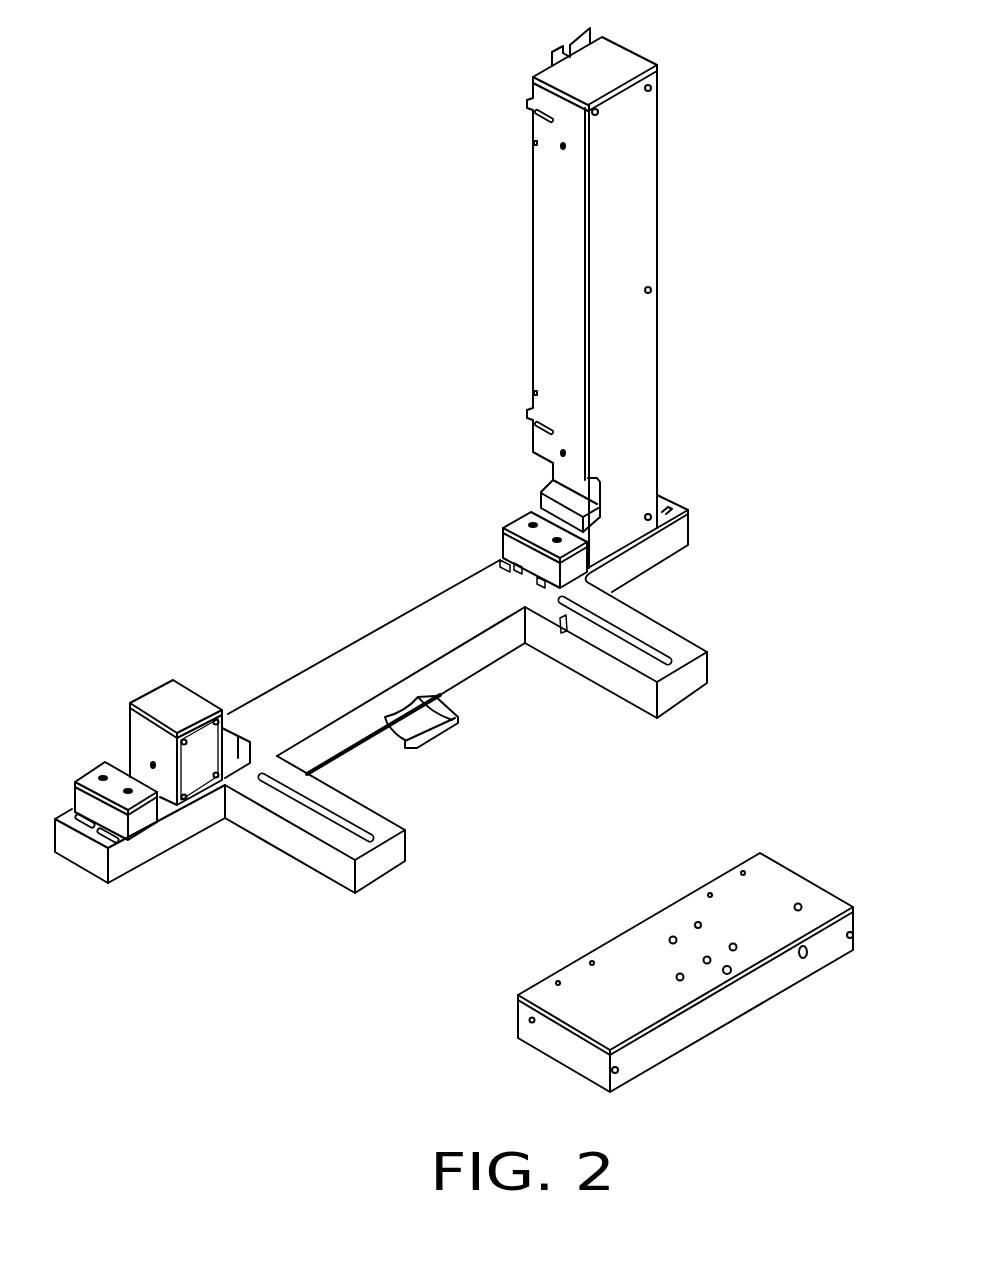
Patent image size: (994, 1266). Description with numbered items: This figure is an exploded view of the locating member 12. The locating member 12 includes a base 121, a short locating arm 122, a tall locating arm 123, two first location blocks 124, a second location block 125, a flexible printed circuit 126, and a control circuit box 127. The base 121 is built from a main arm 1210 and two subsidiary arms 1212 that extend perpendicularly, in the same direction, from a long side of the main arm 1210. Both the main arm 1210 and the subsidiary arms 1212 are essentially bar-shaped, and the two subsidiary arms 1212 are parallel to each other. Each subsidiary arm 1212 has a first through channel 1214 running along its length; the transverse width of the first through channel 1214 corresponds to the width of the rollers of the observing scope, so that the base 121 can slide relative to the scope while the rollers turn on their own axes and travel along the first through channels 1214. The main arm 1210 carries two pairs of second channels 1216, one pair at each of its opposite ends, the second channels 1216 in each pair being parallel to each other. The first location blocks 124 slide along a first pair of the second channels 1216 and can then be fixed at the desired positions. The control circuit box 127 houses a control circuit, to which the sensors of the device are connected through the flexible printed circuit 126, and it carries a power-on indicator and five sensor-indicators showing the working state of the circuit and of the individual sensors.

The locating member 12 is at (382, 75).
The base 121 is at (80, 857).
The main arm 1210 is at (393, 642).
The subsidiary arms 1212 is at (297, 837).
The first through channel 1214 is at (315, 808).
The second channels 1216 is at (515, 563).
The short locating arm 122 is at (165, 695).
The tall locating arm 123 is at (592, 48).
The first location blocks 124 is at (97, 772).
The second location block 125 is at (528, 523).
The flexible printed circuit 126 is at (413, 713).
The control circuit box 127 is at (765, 990).